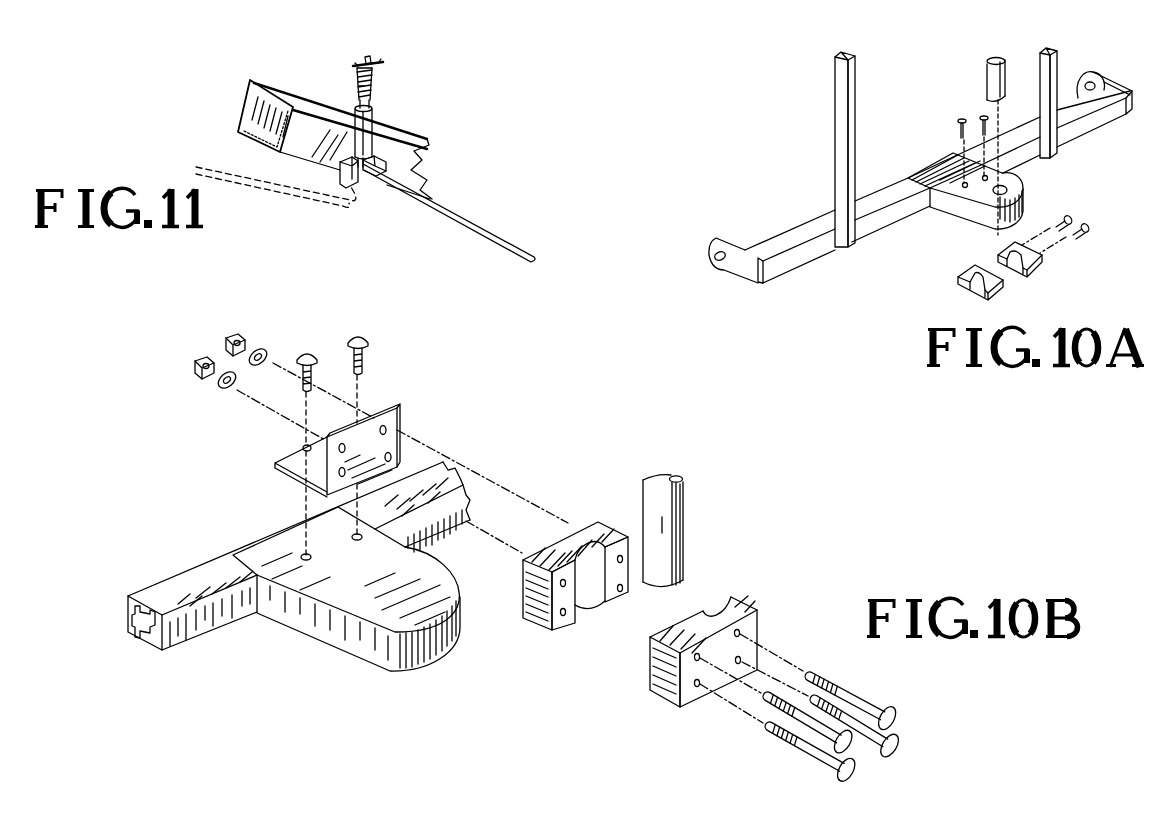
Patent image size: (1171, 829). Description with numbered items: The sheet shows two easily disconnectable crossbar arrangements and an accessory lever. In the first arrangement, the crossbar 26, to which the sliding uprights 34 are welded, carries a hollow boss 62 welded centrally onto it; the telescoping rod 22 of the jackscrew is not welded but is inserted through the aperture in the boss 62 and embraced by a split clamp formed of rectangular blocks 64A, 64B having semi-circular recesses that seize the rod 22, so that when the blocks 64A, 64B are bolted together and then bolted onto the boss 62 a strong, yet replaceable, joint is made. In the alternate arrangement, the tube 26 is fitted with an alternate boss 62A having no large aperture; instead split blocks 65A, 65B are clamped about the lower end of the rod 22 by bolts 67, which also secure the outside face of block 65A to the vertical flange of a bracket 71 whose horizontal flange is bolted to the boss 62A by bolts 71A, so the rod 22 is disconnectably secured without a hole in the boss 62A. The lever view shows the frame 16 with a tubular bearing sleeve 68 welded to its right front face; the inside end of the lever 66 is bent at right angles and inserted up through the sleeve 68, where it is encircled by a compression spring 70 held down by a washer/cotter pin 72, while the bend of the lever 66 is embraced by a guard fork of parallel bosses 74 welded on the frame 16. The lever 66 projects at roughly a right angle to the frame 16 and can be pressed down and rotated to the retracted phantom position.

In FIG. 11, the frame 16 is at (306, 112).
In FIG. 10A, the telescoping rod of the jackscrew 22 is at (985, 77).
In FIG. 10B, the telescoping rod of the jackscrew 22 is at (685, 521).
In FIG. 10A, the crossbar 26 is at (790, 230).
In FIG. 10B, the crossbar 26 is at (182, 575).
In FIG. 10A, the sliding uprights 34 is at (835, 110).
In FIG. 10A, the hollow boss 62 is at (967, 214).
In FIG. 10B, the alternate boss 62A is at (305, 630).
In FIG. 10A, the split clamp block 64A is at (958, 283).
In FIG. 10A, the split clamp block 64B is at (1043, 263).
In FIG. 10B, the split block 65A is at (587, 520).
In FIG. 10B, the split block 65B is at (747, 603).
In FIG. 11, the lever 66 is at (478, 228).
In FIG. 10B, the bolts 67 is at (897, 746).
In FIG. 11, the tubular bearing sleeve 68 is at (374, 116).
In FIG. 11, the compression spring 70 is at (352, 86).
In FIG. 10B, the bracket 71 is at (400, 414).
In FIG. 10B, the bolts 71A is at (350, 340).
In FIG. 11, the washer/cotter pin 72 is at (378, 62).
In FIG. 11, the parallel bosses 74 is at (387, 173).